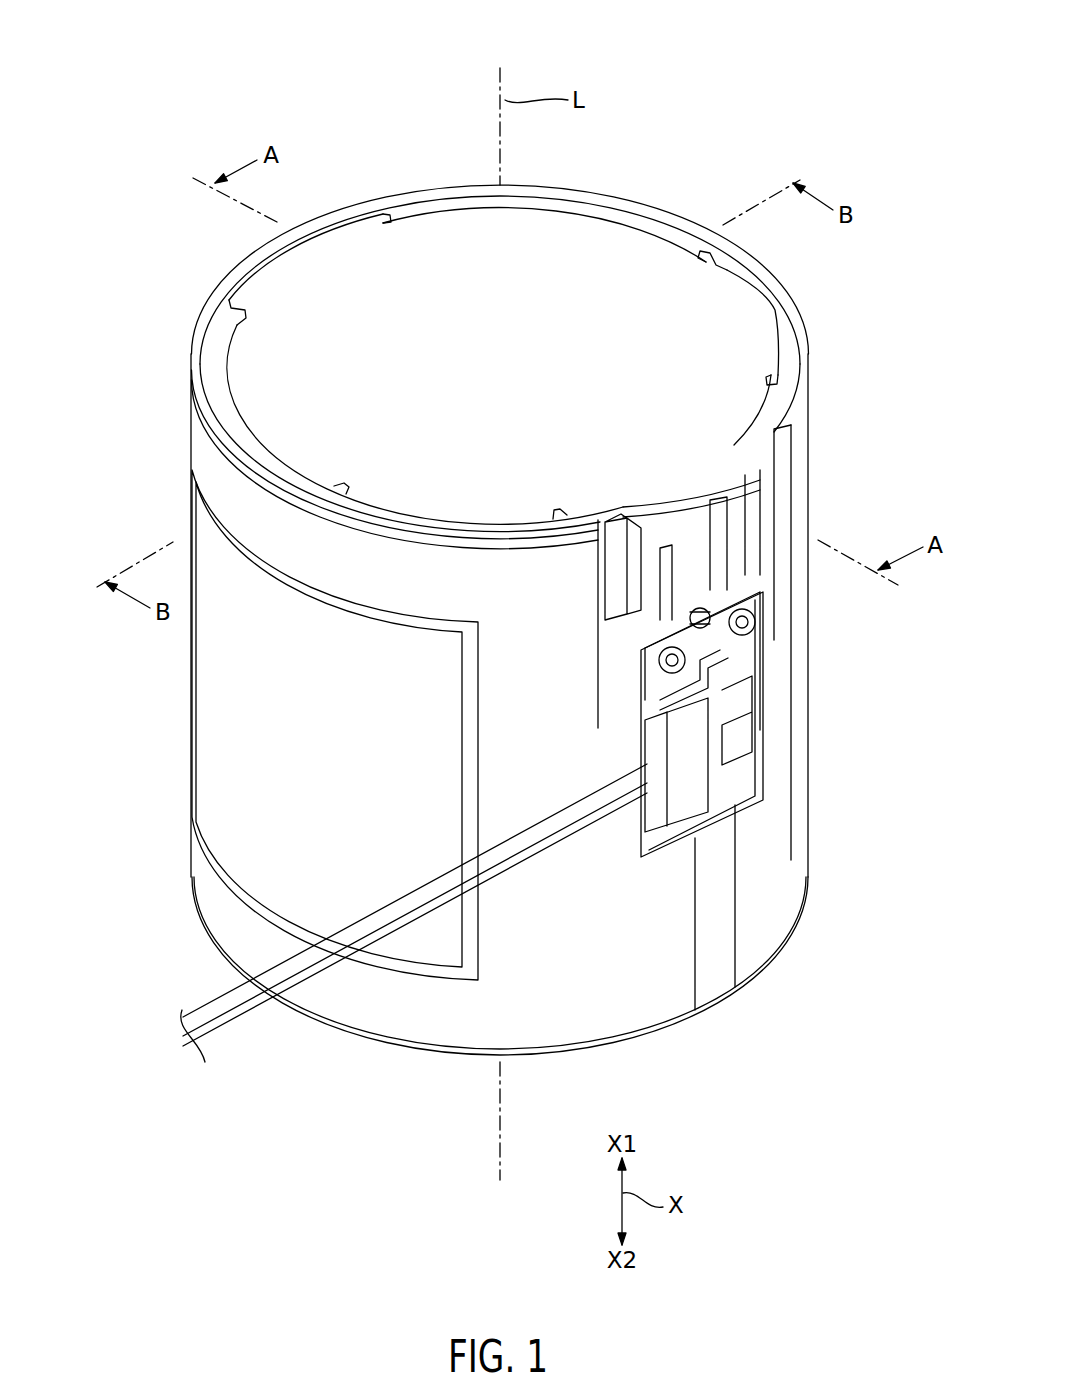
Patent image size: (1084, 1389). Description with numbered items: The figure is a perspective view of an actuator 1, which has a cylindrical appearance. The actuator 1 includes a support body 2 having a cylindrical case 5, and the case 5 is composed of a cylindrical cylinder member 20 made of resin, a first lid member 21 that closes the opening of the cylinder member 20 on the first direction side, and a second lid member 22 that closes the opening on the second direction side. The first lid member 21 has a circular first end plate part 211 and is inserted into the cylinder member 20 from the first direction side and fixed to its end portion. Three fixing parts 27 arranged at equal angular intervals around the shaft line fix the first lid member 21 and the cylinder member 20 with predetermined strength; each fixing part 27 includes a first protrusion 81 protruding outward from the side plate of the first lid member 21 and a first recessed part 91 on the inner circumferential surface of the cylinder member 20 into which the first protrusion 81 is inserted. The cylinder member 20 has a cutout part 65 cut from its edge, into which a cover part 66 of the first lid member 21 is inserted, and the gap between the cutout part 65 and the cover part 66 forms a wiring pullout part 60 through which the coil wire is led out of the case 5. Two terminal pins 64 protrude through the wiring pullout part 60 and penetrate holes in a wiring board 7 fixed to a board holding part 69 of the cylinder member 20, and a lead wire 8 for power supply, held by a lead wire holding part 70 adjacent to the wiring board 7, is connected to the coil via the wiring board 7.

The actuator 1 is at (243, 82).
The support body 2 is at (180, 350).
The case 5 is at (815, 355).
The wiring board 7 is at (752, 772).
The lead wire 8 is at (222, 1015).
The cylinder member 20 is at (783, 835).
The first lid member 21 is at (597, 258).
The first end plate part 211 is at (627, 300).
The second lid member 22 is at (430, 1060).
The fixing part 27 is at (233, 292).
The wiring pullout part 60 is at (730, 580).
The terminal pin 64 is at (748, 625).
The cutout part 65 is at (624, 560).
The cover part 66 is at (770, 503).
The board holding part 69 is at (768, 712).
The lead wire holding part 70 is at (648, 742).
The first protrusion 81 is at (285, 265).
The first recessed part 91 is at (257, 280).